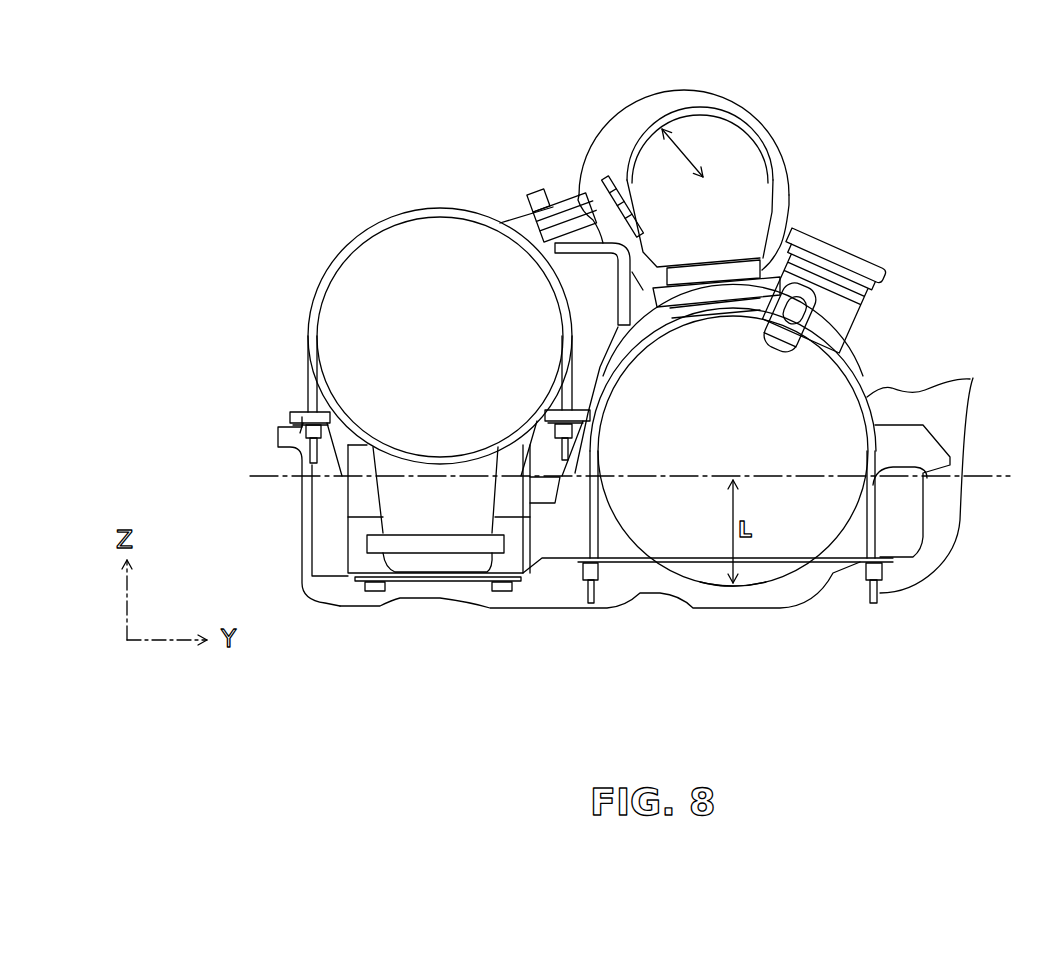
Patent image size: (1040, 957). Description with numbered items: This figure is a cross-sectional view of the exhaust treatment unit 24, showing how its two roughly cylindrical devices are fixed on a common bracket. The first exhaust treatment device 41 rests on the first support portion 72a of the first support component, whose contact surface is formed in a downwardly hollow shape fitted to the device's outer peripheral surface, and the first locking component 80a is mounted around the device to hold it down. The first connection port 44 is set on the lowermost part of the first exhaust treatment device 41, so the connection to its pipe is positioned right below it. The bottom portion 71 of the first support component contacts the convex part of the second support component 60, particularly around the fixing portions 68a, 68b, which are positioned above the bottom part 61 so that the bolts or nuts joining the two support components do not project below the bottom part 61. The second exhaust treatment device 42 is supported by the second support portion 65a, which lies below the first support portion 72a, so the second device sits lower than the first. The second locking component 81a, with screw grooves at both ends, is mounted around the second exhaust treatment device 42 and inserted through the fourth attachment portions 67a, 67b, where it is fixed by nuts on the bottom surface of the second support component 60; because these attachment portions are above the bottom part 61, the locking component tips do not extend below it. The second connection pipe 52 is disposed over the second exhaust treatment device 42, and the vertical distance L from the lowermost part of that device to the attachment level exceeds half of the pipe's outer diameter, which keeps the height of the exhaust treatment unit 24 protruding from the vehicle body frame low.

The exhaust treatment unit 24 is at (930, 701).
The first exhaust treatment device 41 is at (457, 270).
The second exhaust treatment device 42 is at (828, 388).
The first connection port 44 is at (425, 497).
The second connection pipe 52 is at (749, 96).
The second support component 60 is at (293, 462).
The bottom part 61 is at (775, 612).
The second support portion 65a is at (737, 593).
The fourth attachment portion 67a is at (606, 568).
The fourth attachment portion 67b is at (856, 567).
The fixing portion 68a is at (358, 590).
The fixing portion 68b is at (518, 590).
The bottom portion 71 is at (437, 583).
The first support portion 72a is at (437, 467).
The first locking component 80a is at (310, 366).
The second locking component 81a is at (797, 438).